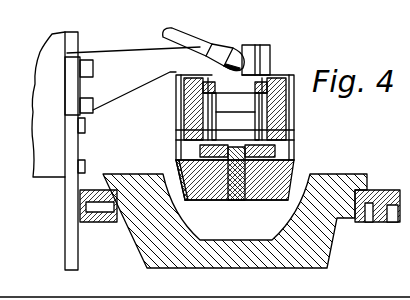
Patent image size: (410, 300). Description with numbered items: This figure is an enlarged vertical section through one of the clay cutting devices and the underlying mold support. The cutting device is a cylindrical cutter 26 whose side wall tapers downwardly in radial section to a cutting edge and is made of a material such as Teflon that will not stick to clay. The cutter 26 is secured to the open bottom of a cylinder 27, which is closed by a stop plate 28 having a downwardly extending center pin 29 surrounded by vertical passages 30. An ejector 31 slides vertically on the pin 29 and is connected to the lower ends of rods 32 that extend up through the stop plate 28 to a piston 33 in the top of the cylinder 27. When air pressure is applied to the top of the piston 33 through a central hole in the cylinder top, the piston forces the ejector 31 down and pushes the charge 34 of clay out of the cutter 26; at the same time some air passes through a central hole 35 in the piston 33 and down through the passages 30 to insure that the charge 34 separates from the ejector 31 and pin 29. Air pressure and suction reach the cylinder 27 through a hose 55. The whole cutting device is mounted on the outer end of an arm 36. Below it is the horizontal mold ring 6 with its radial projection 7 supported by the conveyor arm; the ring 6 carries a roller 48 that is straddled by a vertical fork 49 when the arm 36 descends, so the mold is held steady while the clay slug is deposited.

The horizontal ring 6 is at (118, 223).
The radial projection 7 is at (378, 190).
The cutter 26 is at (291, 166).
The cylinder 27 is at (176, 104).
The stop plate 28 is at (177, 158).
The center pin 29 is at (241, 200).
The vertical passages 30 is at (293, 138).
The ejector 31 is at (295, 153).
The rods 32 is at (251, 127).
The piston 33 is at (196, 120).
The charge of clay 34 is at (209, 200).
The central hole 35 is at (218, 104).
The arm 36 is at (109, 64).
The roller 48 is at (79, 222).
The vertical fork 49 is at (65, 246).
The hose 55 is at (207, 44).